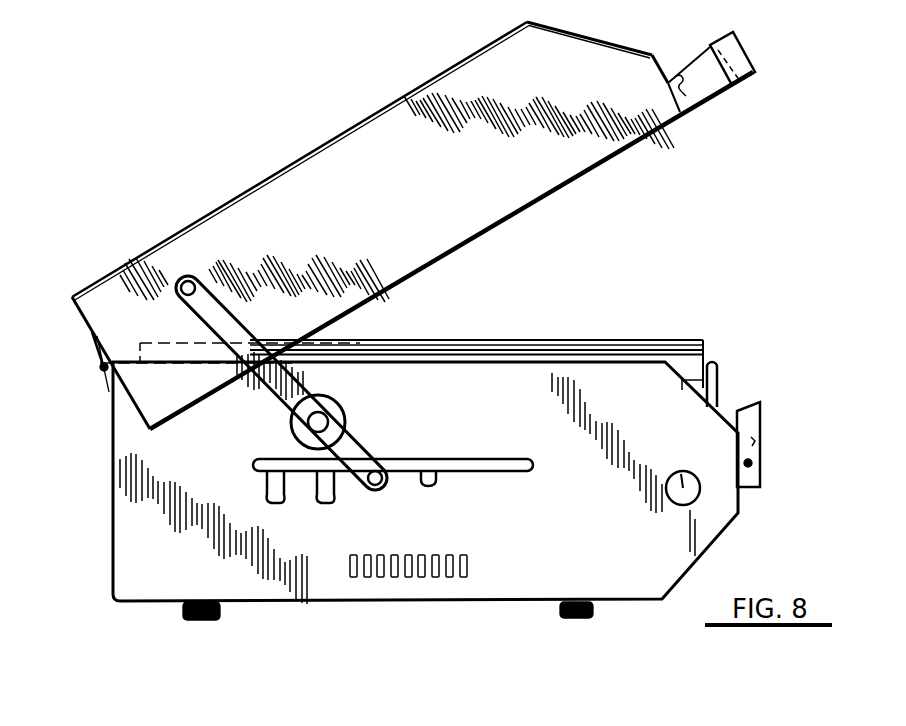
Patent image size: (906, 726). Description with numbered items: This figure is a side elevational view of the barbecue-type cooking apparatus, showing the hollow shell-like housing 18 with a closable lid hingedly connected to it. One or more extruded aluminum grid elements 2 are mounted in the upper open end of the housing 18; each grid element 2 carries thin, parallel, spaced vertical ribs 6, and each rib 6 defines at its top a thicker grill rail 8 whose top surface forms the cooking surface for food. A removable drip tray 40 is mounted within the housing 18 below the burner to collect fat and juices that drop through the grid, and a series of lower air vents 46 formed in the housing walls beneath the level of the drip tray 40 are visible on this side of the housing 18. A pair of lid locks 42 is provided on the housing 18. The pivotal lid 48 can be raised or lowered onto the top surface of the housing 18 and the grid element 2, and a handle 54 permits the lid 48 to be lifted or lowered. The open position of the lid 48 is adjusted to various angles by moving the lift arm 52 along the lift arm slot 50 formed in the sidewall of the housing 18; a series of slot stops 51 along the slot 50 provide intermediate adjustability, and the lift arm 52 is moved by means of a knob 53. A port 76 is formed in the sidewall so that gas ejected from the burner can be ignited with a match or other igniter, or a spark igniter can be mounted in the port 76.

The grid element 2 is at (607, 339).
The vertical ribs 6 is at (397, 358).
The grill rail 8 is at (515, 340).
The housing 18 is at (109, 490).
The drip tray 40 is at (718, 387).
The lid locks 42 is at (758, 440).
The lower air vents 46 is at (423, 578).
The pivotal lid 48 is at (509, 223).
The lift arm slot 50 is at (457, 457).
The slot stops 51 is at (322, 500).
The lift arm 52 is at (272, 398).
The knob 53 is at (346, 399).
The handle 54 is at (754, 74).
The port 76 is at (684, 471).